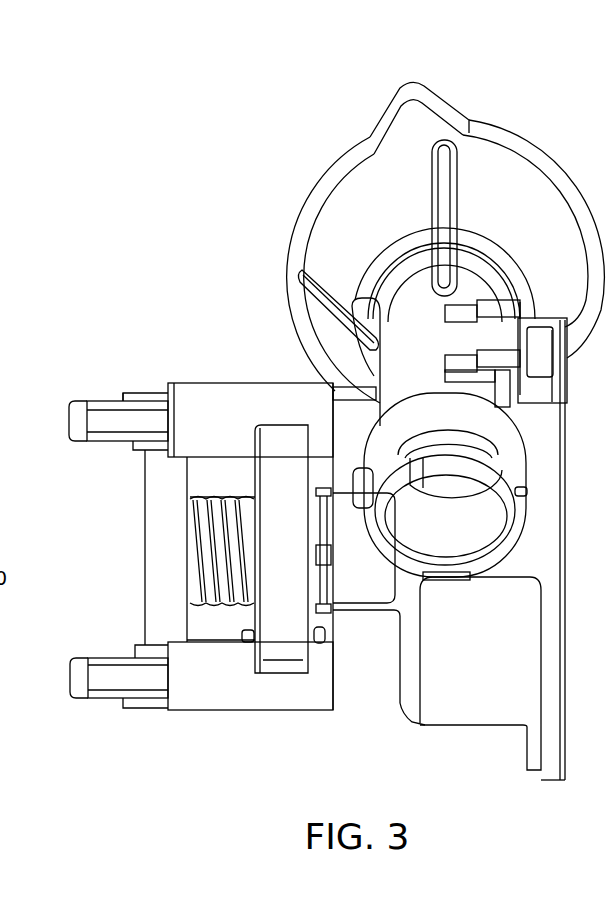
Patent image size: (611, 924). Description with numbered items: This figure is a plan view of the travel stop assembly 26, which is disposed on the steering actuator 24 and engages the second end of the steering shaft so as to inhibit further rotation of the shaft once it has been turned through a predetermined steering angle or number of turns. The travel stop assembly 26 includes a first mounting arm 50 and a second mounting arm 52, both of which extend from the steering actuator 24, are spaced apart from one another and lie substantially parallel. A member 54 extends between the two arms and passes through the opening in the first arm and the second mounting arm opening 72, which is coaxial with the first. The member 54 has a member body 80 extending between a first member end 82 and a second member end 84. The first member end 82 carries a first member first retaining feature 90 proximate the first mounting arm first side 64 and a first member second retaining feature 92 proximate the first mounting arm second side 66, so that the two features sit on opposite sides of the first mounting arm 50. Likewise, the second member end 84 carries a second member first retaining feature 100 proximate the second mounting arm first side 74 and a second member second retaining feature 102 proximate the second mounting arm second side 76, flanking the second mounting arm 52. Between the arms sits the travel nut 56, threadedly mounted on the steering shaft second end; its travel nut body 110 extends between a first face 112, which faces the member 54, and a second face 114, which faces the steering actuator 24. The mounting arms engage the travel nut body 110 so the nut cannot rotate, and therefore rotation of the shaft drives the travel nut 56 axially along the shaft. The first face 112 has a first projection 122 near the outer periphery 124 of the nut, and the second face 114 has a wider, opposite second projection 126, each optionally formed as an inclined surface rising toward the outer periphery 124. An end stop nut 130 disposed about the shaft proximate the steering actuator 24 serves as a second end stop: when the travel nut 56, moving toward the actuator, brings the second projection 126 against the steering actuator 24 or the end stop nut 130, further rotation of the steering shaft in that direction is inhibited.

The steering actuator 24 is at (447, 708).
The travel stop assembly 26 is at (213, 264).
The first mounting arm 50 is at (210, 380).
The second mounting arm 52 is at (235, 690).
The member 54 is at (146, 522).
The travel nut 56 is at (275, 690).
The first mounting arm first side 64 is at (97, 400).
The first mounting arm second side 66 is at (103, 440).
The second mounting arm opening 72 is at (84, 484).
The second mounting arm first side 74 is at (103, 700).
The second mounting arm second side 76 is at (100, 660).
The member body 80 is at (160, 548).
The first member end 82 is at (144, 378).
The second member end 84 is at (103, 721).
The first member first retaining feature 90 is at (132, 391).
The first member second retaining feature 92 is at (135, 452).
The second member first retaining feature 100 is at (125, 703).
The second member second retaining feature 102 is at (138, 652).
The travel nut body 110 is at (278, 453).
The first face 112 is at (248, 478).
The second face 114 is at (337, 381).
The first projection 122 is at (247, 633).
The outer periphery 124 is at (322, 455).
The second projection 126 is at (322, 643).
The end stop nut 130 is at (317, 490).